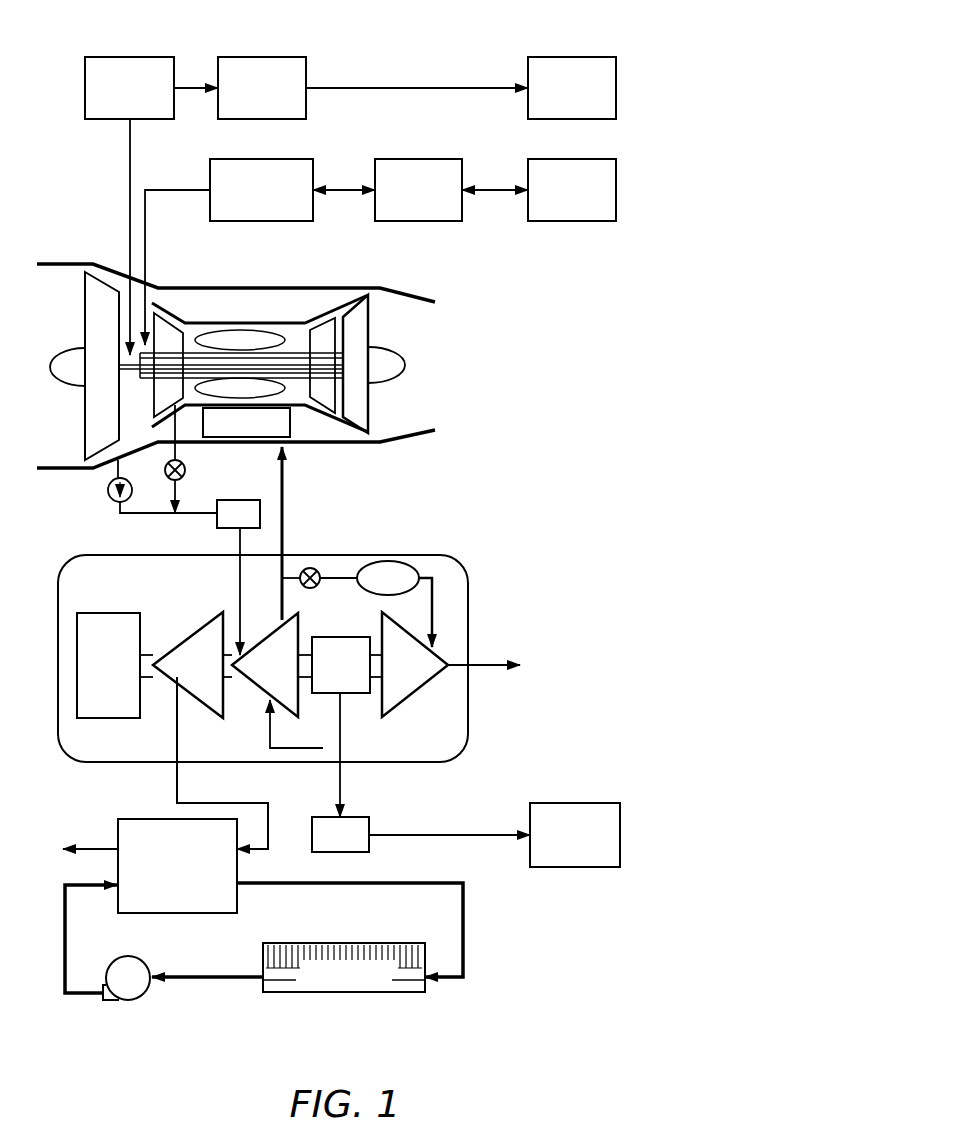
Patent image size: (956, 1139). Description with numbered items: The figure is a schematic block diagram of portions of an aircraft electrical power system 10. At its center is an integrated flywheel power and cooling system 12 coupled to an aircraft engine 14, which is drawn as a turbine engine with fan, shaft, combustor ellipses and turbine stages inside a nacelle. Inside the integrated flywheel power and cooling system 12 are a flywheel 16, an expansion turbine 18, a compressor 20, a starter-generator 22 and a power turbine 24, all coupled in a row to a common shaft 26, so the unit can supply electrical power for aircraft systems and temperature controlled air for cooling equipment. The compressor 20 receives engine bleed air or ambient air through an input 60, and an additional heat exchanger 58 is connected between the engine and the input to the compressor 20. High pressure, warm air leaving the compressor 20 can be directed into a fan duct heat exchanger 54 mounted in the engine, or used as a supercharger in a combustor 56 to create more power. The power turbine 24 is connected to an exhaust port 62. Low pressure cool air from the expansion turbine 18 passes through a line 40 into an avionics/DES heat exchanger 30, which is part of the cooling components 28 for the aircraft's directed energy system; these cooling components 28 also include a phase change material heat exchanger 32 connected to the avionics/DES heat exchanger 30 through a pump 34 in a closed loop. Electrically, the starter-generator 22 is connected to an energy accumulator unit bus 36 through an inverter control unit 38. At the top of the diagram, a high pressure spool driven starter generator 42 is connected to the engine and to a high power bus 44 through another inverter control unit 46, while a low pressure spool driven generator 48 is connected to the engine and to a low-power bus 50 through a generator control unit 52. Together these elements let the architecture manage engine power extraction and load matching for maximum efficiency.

The aircraft electrical power system 10 is at (558, 378).
The integrated flywheel power and cooling system 12 is at (430, 555).
The aircraft engine 14 is at (460, 322).
The flywheel 16 is at (87, 718).
The expansion turbine 18 is at (193, 627).
The compressor 20 is at (257, 685).
The starter-generator 22 is at (355, 693).
The power turbine 24 is at (418, 693).
The common shaft 26 is at (150, 677).
The cooling components 28 is at (331, 960).
The avionics/DES heat exchanger 30 is at (163, 913).
The phase change material heat exchanger 32 is at (345, 992).
The pump 34 is at (118, 1000).
The energy accumulator unit bus 36 is at (570, 803).
The inverter control unit 38 is at (355, 852).
The line 40 is at (175, 788).
The high pressure spool driven starter generator 42 is at (270, 159).
The high power bus 44 is at (568, 159).
The inverter control unit 46 is at (418, 159).
The low pressure spool driven generator 48 is at (130, 57).
The low-power bus 50 is at (573, 57).
The generator control unit 52 is at (262, 57).
The fan duct heat exchanger 54 is at (290, 421).
The combustor 56 is at (368, 595).
The additional heat exchanger 58 is at (252, 500).
The input 60 is at (312, 750).
The exhaust port 62 is at (480, 660).